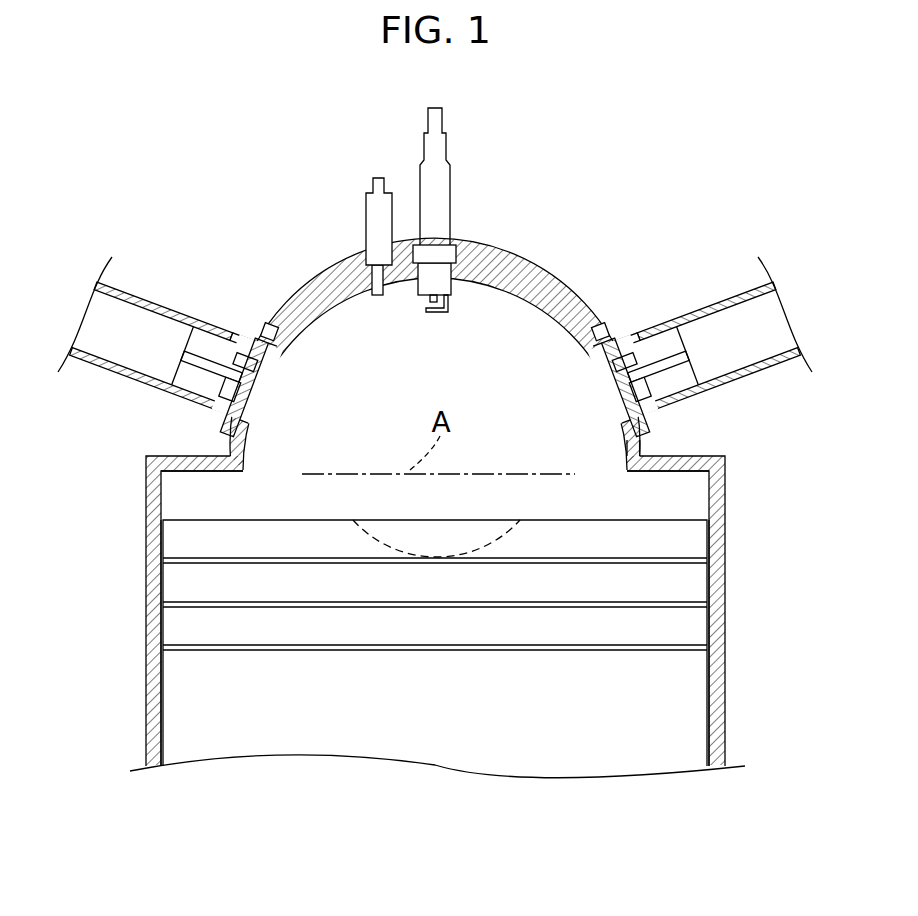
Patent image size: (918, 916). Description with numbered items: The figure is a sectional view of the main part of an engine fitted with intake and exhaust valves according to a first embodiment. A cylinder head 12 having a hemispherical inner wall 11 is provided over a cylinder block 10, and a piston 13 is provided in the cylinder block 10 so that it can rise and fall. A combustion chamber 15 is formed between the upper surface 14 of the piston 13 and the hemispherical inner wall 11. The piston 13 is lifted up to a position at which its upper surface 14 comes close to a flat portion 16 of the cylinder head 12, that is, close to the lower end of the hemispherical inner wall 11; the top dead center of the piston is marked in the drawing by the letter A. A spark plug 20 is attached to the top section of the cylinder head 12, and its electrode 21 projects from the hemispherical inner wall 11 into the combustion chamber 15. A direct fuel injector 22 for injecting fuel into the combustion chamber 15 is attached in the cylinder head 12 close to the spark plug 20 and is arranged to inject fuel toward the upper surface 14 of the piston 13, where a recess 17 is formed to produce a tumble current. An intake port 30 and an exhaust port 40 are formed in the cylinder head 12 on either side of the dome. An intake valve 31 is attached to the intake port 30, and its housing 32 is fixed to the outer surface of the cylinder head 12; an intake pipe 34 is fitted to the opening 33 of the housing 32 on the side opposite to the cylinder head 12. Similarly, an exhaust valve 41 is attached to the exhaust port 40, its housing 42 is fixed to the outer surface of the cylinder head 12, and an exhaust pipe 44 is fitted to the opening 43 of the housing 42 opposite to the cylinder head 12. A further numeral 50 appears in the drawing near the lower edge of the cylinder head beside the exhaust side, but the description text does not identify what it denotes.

The cylinder block 10 is at (723, 677).
The hemispherical inner wall 11 is at (338, 303).
The cylinder head 12 is at (513, 278).
The piston 13 is at (652, 727).
The upper surface 14 is at (678, 518).
The combustion chamber 15 is at (420, 384).
The flat portion 16 is at (677, 453).
The recess 17 is at (416, 520).
The spark plug 20 is at (450, 208).
The electrode 21 is at (450, 306).
The direct fuel injector 22 is at (366, 228).
The intake port 30 is at (273, 373).
The intake valve 31 is at (270, 414).
The housing 32 is at (244, 328).
The opening 33 is at (170, 362).
The intake pipe 34 is at (145, 296).
The exhaust port 40 is at (597, 372).
The exhaust valve 41 is at (601, 398).
The housing 42 is at (627, 325).
The opening 43 is at (693, 355).
The exhaust pipe 44 is at (723, 292).
The cylinder head lower edge portion 50 is at (623, 407).